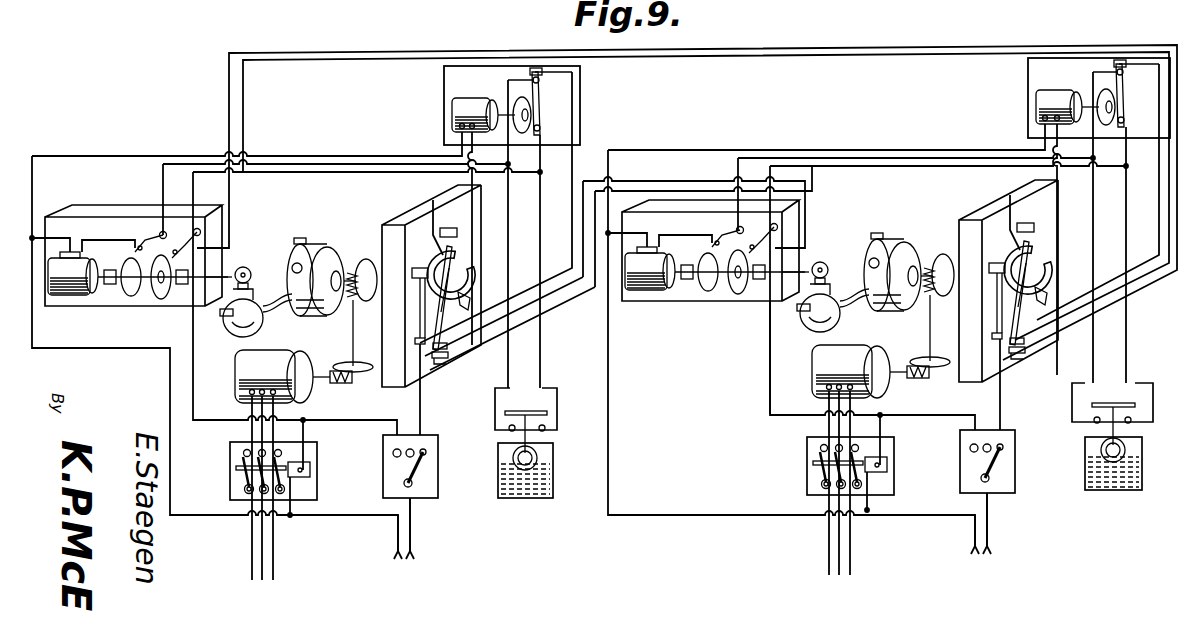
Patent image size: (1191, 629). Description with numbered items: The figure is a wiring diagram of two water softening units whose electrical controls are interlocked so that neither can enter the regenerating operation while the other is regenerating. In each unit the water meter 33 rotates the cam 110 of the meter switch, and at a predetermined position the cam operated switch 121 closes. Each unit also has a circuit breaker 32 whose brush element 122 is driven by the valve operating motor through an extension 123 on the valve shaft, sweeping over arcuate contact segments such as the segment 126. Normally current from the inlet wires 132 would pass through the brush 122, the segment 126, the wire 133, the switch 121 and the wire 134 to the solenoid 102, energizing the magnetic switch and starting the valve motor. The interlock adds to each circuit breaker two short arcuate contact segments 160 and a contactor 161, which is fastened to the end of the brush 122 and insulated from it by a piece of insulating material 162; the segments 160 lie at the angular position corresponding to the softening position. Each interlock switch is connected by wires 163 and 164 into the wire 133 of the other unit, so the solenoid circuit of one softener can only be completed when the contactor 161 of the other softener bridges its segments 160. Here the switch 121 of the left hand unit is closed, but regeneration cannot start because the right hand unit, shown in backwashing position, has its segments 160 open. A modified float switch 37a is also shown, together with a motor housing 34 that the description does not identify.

The circuit breaker 32 is at (387, 251).
The water meter 33 is at (232, 336).
The motor casing 34 is at (115, 212).
The float switch 37a is at (533, 433).
The solenoid 102 is at (318, 456).
The cam element 110 is at (158, 297).
The cam operated switch 121 is at (176, 230).
The brush element 122 is at (350, 312).
The extension on the valve shaft 123 is at (306, 258).
The arcuate contact segment 126 is at (410, 222).
The inlet wires 132 is at (409, 558).
The wire 133 is at (303, 176).
The wire 134 is at (770, 392).
The arcuate contact segments 160 is at (413, 380).
The contactor 161 is at (448, 358).
The insulating material 162 is at (449, 346).
The wire 163 is at (358, 46).
The wire 164 is at (344, 61).